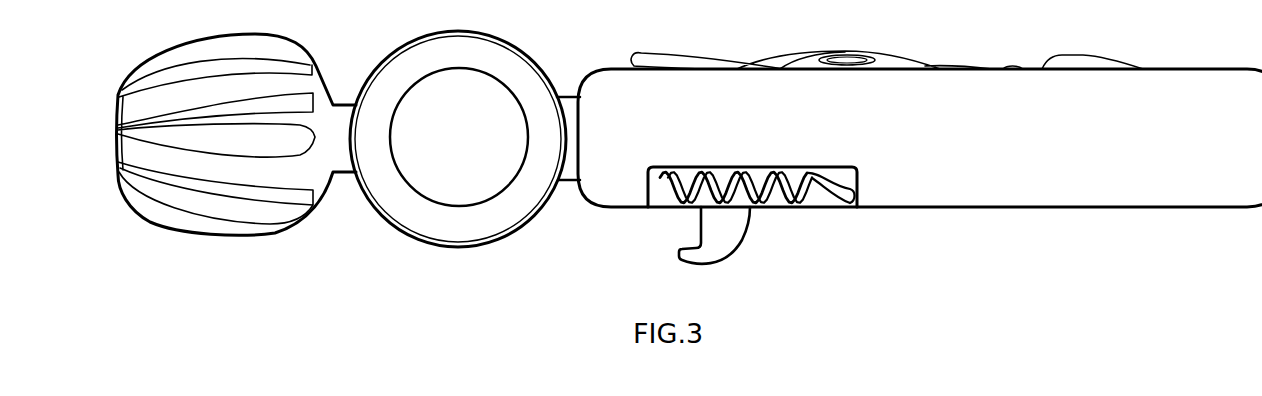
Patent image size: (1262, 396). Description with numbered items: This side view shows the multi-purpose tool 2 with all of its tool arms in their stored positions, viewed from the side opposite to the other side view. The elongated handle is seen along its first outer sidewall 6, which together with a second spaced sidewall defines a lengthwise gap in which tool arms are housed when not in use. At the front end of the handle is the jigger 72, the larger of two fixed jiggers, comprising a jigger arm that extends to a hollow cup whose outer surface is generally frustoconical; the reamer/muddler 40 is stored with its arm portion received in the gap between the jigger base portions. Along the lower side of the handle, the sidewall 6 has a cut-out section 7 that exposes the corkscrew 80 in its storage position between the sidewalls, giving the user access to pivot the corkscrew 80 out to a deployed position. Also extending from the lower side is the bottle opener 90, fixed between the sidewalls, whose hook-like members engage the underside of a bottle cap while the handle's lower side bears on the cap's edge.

The multi-purpose tool 2 is at (690, 168).
The first outer sidewall 6 is at (1183, 188).
The cut-out section 7 is at (660, 207).
The reamer/muddler 40 is at (223, 215).
The jigger 72 is at (458, 200).
The corkscrew 80 is at (785, 195).
The bottle opener 90 is at (733, 228).